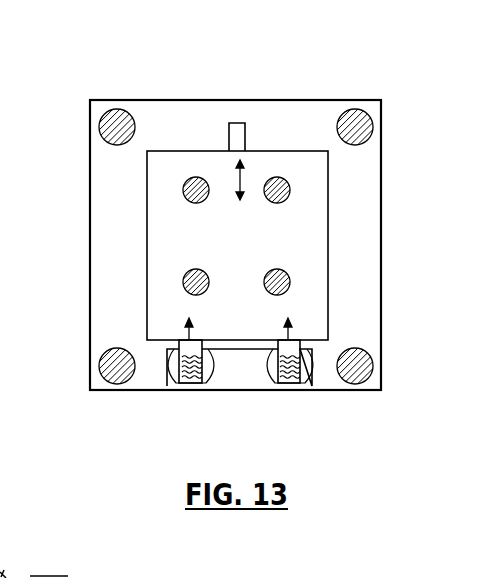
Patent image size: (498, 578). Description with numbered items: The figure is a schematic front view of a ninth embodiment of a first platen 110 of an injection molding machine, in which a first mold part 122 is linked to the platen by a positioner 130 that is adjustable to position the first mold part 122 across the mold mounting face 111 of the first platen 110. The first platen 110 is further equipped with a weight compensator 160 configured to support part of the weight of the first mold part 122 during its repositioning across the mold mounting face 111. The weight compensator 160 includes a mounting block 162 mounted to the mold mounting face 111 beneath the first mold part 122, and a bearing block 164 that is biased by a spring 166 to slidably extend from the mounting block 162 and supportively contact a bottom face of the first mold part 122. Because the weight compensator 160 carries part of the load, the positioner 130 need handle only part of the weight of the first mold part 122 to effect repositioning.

The first platen 110 is at (194, 100).
The mold mounting face 111 is at (327, 113).
The positioner 130 is at (246, 128).
The first mold part 122 is at (255, 330).
The weight compensator 160 is at (242, 381).
The mounting block 162 is at (228, 375).
The bearing block 164 is at (193, 344).
The spring 166 is at (245, 380).